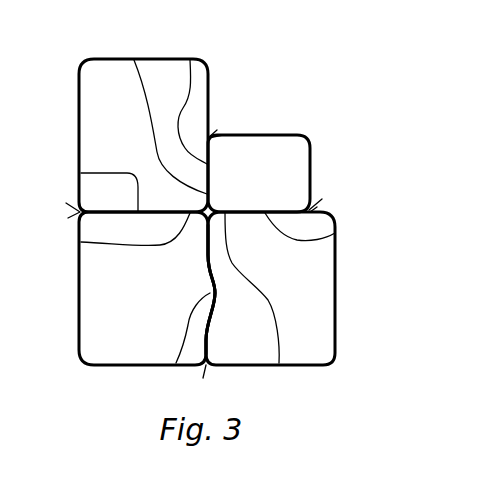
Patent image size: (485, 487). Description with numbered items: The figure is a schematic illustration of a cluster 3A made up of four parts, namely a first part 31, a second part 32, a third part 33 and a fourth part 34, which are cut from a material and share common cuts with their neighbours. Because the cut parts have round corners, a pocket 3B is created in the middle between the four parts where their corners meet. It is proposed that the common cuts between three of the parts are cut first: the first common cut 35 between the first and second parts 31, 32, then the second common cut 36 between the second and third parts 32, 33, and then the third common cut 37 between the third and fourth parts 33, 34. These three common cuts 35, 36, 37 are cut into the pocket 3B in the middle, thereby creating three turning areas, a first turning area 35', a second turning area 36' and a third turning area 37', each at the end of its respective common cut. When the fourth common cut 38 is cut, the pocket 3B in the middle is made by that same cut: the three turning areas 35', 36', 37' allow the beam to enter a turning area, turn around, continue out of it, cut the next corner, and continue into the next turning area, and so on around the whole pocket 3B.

The cluster 3A is at (250, 99).
The pocket 3B is at (216, 208).
The first part 31 is at (122, 312).
The second part 32 is at (127, 118).
The third part 33 is at (277, 172).
The fourth part 34 is at (317, 330).
The first common cut 35 is at (86, 178).
The first turning area 35' is at (111, 237).
The second common cut 36 is at (175, 89).
The second turning area 36' is at (146, 104).
The third common cut 37 is at (323, 241).
The third turning area 37' is at (254, 317).
The fourth common cut 38 is at (176, 363).